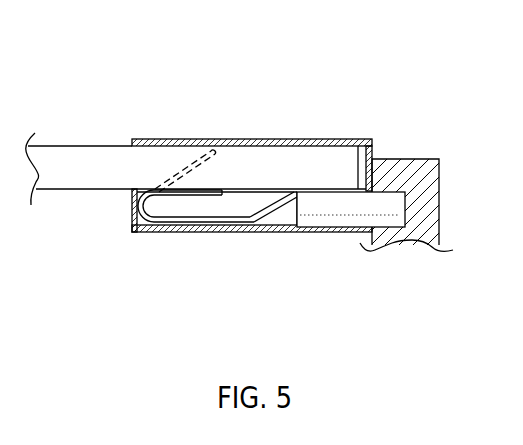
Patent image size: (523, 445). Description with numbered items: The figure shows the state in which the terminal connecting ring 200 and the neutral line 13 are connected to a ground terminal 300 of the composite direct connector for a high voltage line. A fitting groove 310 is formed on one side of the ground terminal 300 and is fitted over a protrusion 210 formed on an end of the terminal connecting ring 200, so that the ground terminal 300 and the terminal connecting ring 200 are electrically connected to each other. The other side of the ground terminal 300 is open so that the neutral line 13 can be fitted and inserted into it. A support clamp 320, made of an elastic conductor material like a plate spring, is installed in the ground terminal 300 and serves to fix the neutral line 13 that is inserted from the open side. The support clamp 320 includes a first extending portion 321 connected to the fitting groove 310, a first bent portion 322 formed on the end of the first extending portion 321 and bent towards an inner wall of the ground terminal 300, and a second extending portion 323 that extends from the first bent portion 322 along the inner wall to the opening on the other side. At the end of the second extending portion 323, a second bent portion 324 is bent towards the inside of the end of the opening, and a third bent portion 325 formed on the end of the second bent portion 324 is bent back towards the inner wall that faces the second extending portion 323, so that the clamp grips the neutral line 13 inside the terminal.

The neutral line 13 is at (88, 157).
The terminal connecting ring 200 is at (407, 170).
The protrusion 210 is at (393, 208).
The ground terminal 300 is at (233, 140).
The fitting groove 310 is at (130, 196).
The support clamp 320 is at (212, 270).
The first extending portion 321 is at (307, 250).
The first bent portion 322 is at (277, 210).
The second extending portion 323 is at (211, 222).
The second bent portion 324 is at (131, 220).
The third bent portion 325 is at (165, 195).